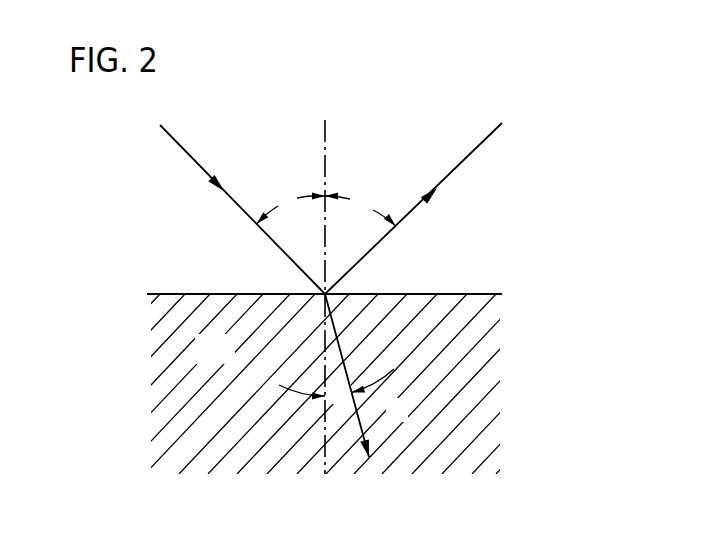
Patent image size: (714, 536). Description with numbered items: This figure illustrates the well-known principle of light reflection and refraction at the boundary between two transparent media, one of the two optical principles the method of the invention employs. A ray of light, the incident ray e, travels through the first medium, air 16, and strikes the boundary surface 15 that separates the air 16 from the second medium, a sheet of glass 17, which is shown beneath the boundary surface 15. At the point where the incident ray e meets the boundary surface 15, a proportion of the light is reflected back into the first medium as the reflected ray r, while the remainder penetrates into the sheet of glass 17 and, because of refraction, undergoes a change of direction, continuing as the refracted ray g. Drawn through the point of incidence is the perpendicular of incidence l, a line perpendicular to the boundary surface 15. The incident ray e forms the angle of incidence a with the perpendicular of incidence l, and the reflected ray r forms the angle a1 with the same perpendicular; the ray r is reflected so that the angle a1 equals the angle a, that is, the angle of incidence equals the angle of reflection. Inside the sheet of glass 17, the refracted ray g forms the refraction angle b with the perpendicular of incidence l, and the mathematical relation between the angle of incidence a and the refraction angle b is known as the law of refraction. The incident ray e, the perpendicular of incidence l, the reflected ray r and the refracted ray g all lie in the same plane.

The boundary surface 15 is at (453, 293).
The air 16 is at (226, 270).
The sheet of glass 17 is at (224, 358).
The incident ray e is at (173, 142).
The reflected ray r is at (477, 148).
The refracted ray g is at (357, 415).
The perpendicular of incidence l is at (326, 134).
The angle of incidence a is at (291, 207).
The angle of reflection a1 is at (360, 208).
The refraction angle b is at (336, 387).